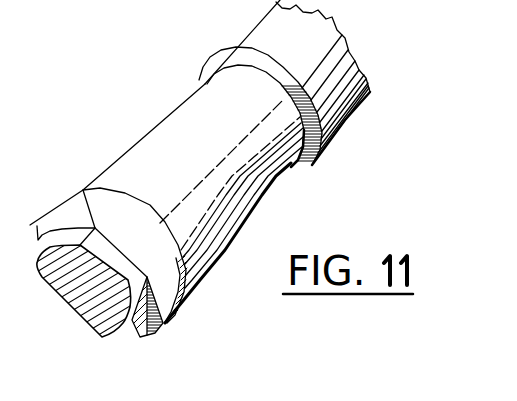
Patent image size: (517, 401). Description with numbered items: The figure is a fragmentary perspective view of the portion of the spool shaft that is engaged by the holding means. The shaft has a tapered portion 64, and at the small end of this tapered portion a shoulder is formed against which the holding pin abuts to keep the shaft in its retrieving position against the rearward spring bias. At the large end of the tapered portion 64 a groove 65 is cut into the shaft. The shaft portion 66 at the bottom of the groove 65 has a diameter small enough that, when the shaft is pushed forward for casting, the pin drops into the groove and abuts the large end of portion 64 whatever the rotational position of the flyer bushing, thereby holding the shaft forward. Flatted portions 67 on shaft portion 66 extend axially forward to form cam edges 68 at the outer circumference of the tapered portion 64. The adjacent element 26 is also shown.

The collar hub 26 is at (262, 27).
The tapered portion 64 is at (192, 110).
The groove 65 is at (58, 222).
The shaft portion 66 is at (82, 312).
The flatted portions 67 is at (117, 248).
The cam edges 68 is at (83, 190).